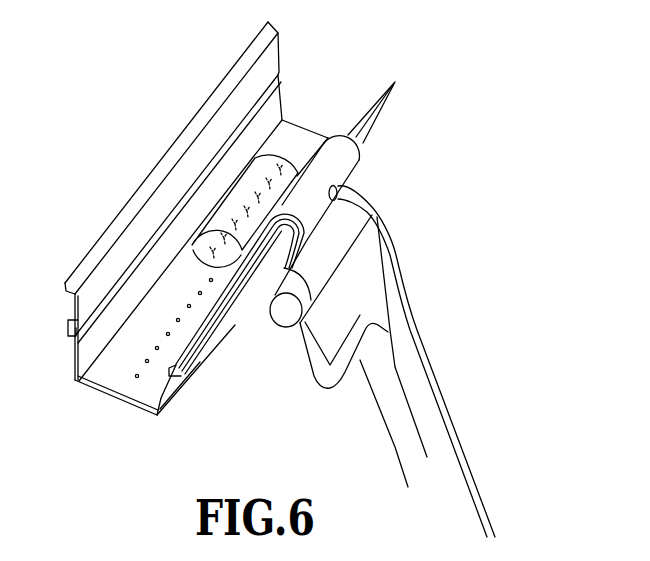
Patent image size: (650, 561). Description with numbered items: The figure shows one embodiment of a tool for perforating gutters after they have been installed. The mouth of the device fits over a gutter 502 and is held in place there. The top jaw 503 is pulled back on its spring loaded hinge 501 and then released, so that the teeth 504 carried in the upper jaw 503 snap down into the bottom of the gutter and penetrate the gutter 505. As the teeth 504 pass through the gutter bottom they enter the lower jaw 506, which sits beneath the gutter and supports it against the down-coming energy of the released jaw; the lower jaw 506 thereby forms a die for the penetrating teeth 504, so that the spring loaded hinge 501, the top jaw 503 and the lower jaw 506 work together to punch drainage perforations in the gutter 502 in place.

The spring loaded hinge 501 is at (358, 238).
The gutter 502 is at (121, 228).
The top jaw 503 is at (360, 150).
The teeth 504 is at (295, 160).
The gutter 505 is at (136, 377).
The lower jaw 506 is at (267, 303).